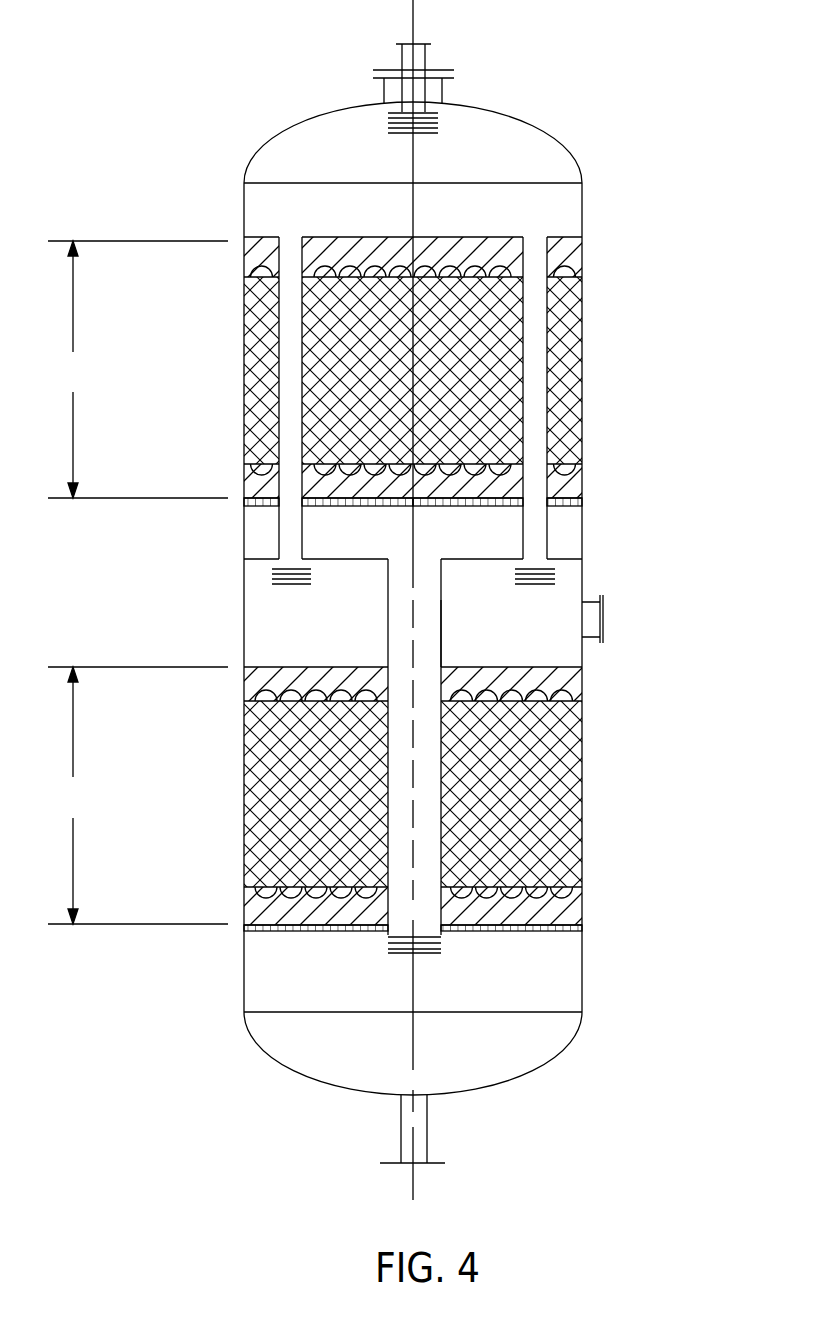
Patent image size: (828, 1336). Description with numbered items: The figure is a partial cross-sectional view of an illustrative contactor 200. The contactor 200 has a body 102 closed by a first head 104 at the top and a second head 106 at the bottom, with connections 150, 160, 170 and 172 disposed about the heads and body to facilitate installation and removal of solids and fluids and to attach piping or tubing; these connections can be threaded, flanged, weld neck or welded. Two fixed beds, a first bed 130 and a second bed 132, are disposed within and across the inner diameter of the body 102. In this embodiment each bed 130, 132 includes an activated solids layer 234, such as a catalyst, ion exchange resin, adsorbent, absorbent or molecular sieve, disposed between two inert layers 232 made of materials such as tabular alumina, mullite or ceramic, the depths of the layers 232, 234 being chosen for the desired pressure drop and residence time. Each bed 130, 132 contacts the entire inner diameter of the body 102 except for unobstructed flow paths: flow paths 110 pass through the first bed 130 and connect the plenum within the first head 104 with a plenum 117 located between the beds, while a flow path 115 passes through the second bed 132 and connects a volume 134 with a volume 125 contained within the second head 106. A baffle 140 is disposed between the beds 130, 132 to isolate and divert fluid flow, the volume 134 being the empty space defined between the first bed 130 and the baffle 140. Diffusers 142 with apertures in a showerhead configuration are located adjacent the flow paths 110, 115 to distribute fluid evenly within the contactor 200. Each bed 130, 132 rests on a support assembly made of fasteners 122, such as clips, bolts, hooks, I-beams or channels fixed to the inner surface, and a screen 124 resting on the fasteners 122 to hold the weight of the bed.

The contactor 200 is at (172, 144).
The body 102 is at (582, 207).
The first head 104 is at (545, 128).
The second head 106 is at (527, 1075).
The flow paths 110 is at (278, 524).
The flow path 115 is at (442, 641).
The plenum 117 is at (258, 643).
The fasteners 122 is at (340, 511).
The screen 124 is at (443, 508).
The volume 125 is at (337, 1064).
The first bed 130 is at (138, 369).
The second bed 132 is at (138, 795).
The volume 134 is at (260, 544).
The baffle 140 is at (356, 559).
The diffusers 142 is at (427, 135).
The connection 150 is at (422, 43).
The connection 160 is at (427, 1143).
The connection 170 is at (443, 68).
The connection 172 is at (590, 600).
The inert layers 232 is at (257, 261).
The activated solids layer 234 is at (258, 350).